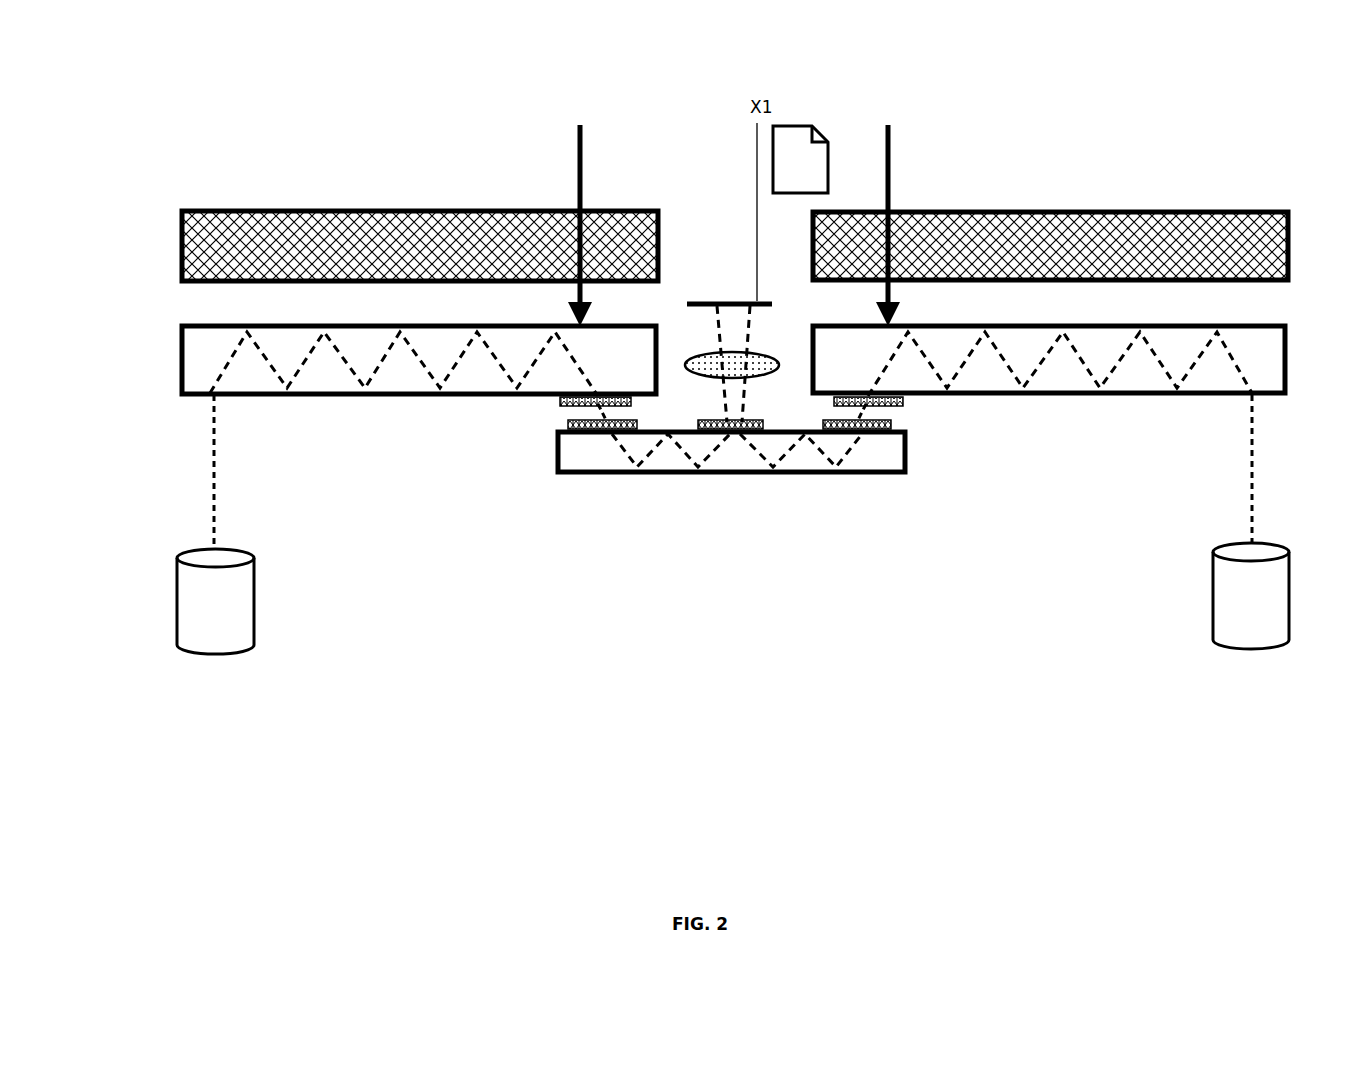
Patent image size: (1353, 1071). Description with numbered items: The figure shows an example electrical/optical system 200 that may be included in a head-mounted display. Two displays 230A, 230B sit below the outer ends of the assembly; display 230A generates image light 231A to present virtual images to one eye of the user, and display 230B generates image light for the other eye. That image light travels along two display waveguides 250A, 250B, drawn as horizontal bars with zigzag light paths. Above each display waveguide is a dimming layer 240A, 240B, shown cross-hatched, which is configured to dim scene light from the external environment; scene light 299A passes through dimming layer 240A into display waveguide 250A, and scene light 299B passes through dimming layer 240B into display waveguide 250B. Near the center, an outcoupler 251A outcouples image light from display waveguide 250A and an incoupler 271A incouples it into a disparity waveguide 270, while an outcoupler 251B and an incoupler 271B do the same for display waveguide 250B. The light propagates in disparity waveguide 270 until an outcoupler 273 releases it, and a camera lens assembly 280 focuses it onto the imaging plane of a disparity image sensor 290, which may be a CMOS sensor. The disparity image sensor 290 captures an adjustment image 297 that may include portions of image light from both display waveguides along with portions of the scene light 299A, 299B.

The electrical/optical system 200 is at (232, 46).
The dimming layer 240A is at (283, 212).
The dimming layer 240B is at (1195, 212).
The display waveguide 250A is at (260, 395).
The display waveguide 250B is at (1220, 395).
The outcoupler 251A is at (560, 401).
The outcoupler 251B is at (903, 400).
The disparity waveguide 270 is at (905, 468).
The incoupler 271A is at (568, 424).
The incoupler 271B is at (893, 426).
The outcoupler 273 is at (755, 422).
The camera lens assembly 280 is at (762, 352).
The disparity image sensor 290 is at (745, 300).
The adjustment image 297 is at (800, 126).
The scene light 299A is at (578, 209).
The scene light 299B is at (891, 209).
The image light 231A is at (212, 513).
The display 230A is at (257, 623).
The display 230B is at (1213, 620).